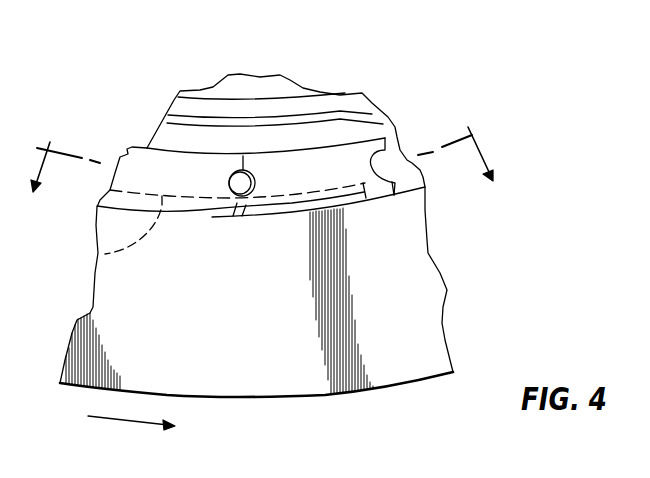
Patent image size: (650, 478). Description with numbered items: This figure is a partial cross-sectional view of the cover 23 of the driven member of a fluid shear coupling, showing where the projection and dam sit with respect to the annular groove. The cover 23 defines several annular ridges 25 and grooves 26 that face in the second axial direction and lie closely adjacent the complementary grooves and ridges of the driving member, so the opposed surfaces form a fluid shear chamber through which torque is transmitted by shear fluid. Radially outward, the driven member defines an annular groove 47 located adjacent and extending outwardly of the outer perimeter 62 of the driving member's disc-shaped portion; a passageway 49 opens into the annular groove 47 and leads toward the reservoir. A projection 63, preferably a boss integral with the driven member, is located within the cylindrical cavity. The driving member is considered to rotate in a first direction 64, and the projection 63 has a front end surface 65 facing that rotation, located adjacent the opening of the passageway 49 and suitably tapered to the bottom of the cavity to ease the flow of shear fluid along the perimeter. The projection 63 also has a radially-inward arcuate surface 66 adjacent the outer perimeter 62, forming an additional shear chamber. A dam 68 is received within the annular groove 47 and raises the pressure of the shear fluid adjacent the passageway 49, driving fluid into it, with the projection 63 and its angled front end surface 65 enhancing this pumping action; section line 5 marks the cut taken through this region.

The cover 23 is at (420, 320).
The annular ridges 25 is at (262, 122).
The grooves 26 is at (233, 110).
The annular groove 47 is at (143, 167).
The passageway 49 is at (240, 185).
The outer perimeter 62 is at (103, 253).
The projection 63 is at (288, 208).
The first direction 64 is at (88, 416).
The front end surface 65 is at (230, 205).
The arcuate surface 66 is at (313, 193).
The dam 68 is at (347, 160).
The section line 5- 5 is at (261, 149).